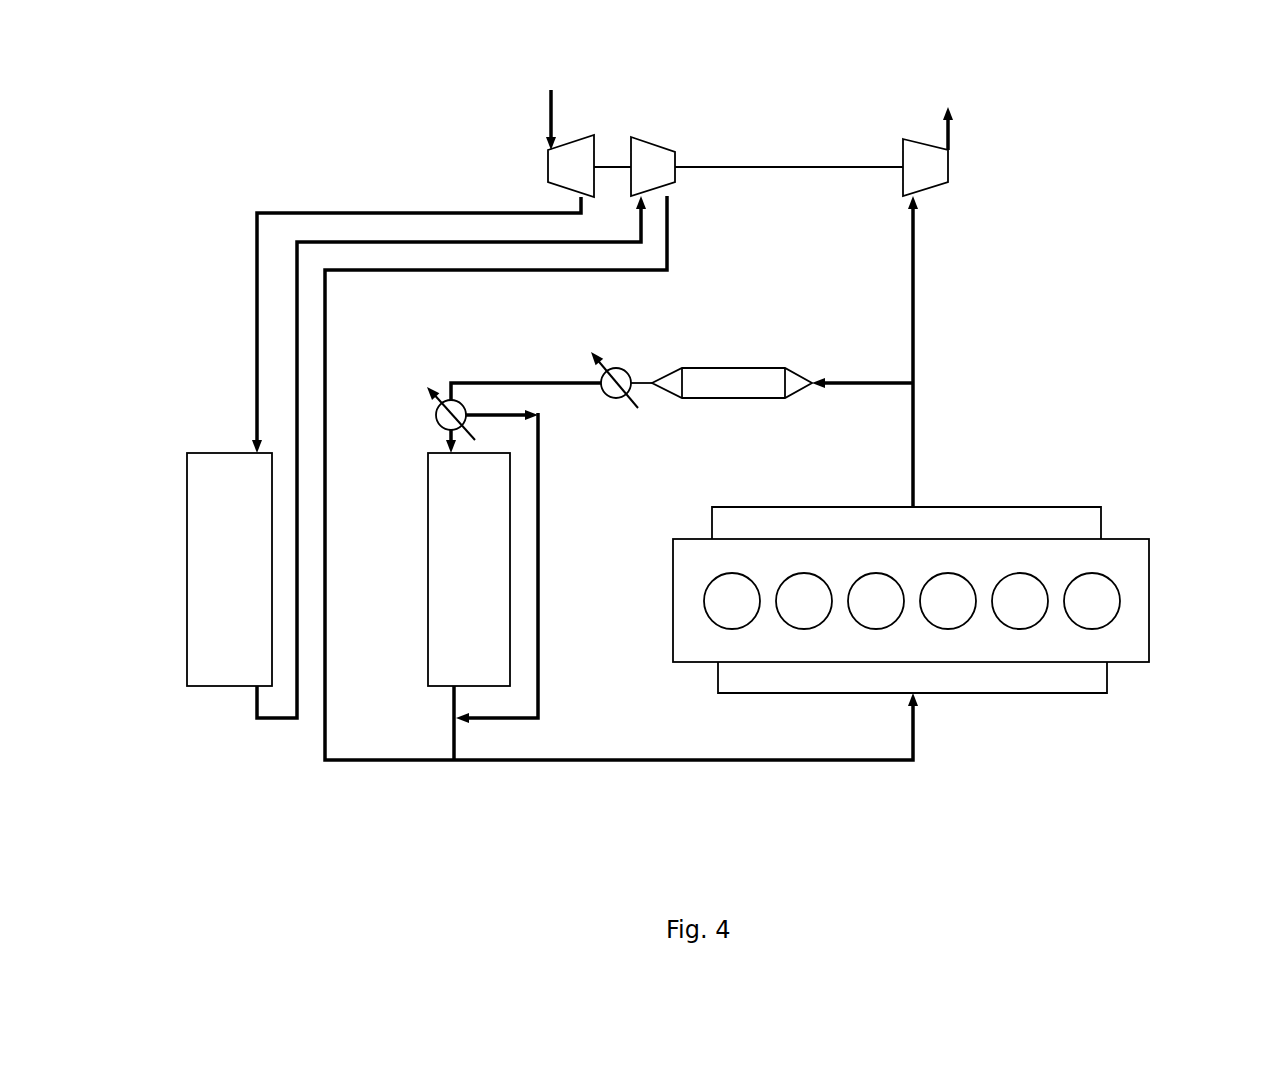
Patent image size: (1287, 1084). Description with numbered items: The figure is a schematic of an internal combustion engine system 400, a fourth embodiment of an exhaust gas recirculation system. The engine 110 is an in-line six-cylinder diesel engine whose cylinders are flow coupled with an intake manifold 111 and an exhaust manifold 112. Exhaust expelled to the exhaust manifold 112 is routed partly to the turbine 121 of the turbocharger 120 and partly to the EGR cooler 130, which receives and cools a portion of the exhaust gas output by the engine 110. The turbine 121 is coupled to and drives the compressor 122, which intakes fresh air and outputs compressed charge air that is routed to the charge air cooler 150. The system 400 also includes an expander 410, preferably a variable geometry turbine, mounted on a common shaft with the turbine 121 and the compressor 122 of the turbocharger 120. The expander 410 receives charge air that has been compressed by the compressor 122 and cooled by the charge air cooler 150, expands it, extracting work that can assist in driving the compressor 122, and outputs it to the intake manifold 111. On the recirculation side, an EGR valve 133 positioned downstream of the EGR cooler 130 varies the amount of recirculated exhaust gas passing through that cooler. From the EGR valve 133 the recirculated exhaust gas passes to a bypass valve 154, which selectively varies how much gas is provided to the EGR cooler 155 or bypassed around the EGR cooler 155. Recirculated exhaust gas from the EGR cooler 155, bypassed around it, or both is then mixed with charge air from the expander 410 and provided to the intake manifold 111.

The internal combustion engine system 400 is at (295, 132).
The engine 110 is at (1135, 597).
The intake manifold 111 is at (1090, 677).
The exhaust manifold 112 is at (1085, 520).
The turbocharger 120 is at (745, 160).
The turbine 121 is at (933, 168).
The compressor 122 is at (575, 158).
The expander 410 is at (658, 168).
The EGR cooler 130 is at (733, 383).
The EGR valve 133 is at (623, 380).
The charge air cooler 150 is at (251, 531).
The bypass valve 154 is at (445, 422).
The EGR cooler 155 is at (491, 529).